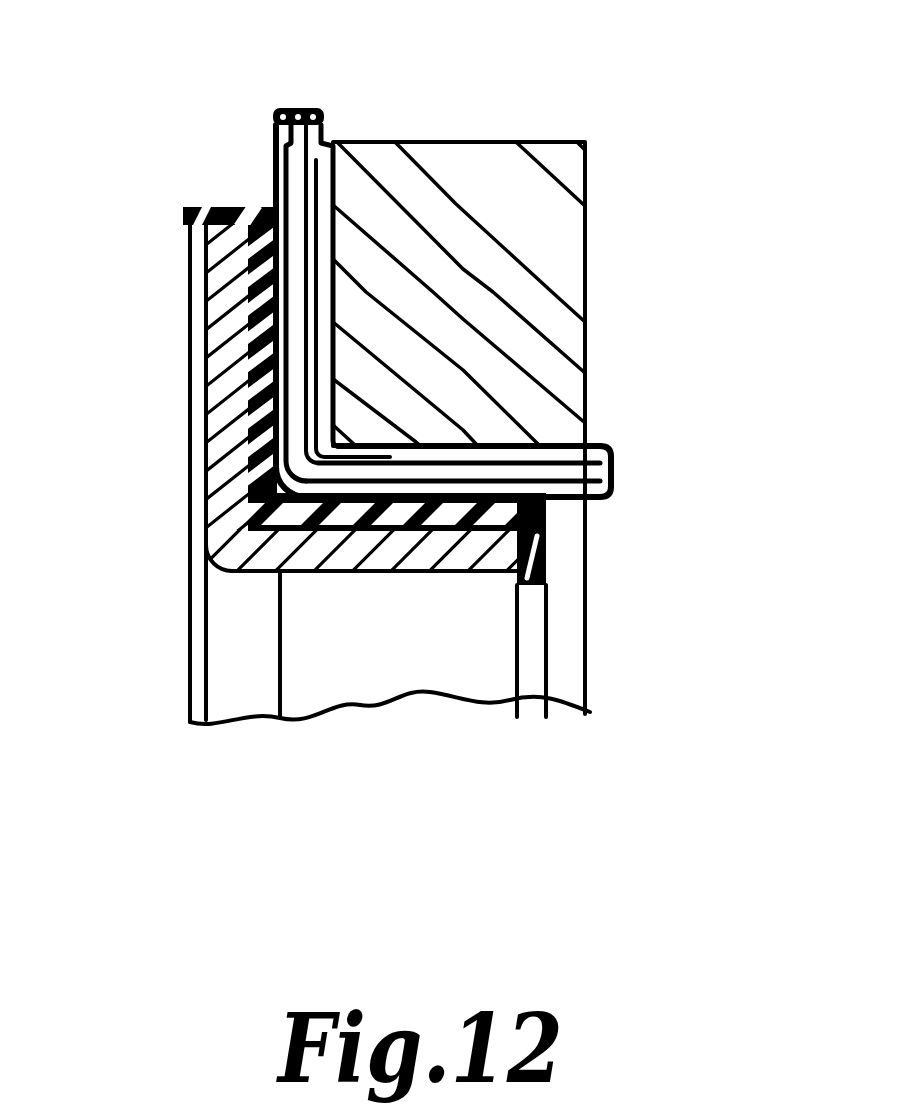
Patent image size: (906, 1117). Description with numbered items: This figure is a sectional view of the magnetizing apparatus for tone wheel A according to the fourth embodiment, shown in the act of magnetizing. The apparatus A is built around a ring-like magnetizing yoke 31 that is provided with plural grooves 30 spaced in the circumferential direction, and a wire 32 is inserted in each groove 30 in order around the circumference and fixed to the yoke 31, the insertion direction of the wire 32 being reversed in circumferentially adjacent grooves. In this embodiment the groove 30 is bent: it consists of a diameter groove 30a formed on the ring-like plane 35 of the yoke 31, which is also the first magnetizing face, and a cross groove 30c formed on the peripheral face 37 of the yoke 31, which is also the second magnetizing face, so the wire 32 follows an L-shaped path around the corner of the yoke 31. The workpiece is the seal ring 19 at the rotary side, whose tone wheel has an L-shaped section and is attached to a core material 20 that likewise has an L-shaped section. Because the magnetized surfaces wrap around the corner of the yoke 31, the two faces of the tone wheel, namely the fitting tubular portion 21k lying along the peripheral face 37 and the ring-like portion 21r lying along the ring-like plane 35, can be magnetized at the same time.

The seal ring 19 is at (184, 243).
The core material 20 is at (218, 524).
The ring-like portion 21r is at (258, 398).
The fitting tubular portion 21k is at (447, 512).
The groove 30 is at (423, 282).
The diameter groove 30a is at (325, 289).
The cross groove 30c is at (522, 510).
The magnetizing yoke 31 is at (557, 355).
The wire 32 is at (308, 110).
The ring-like plane 35 is at (250, 185).
The peripheral face 37 is at (392, 528).
The magnetizing apparatus for tone wheel A is at (615, 170).